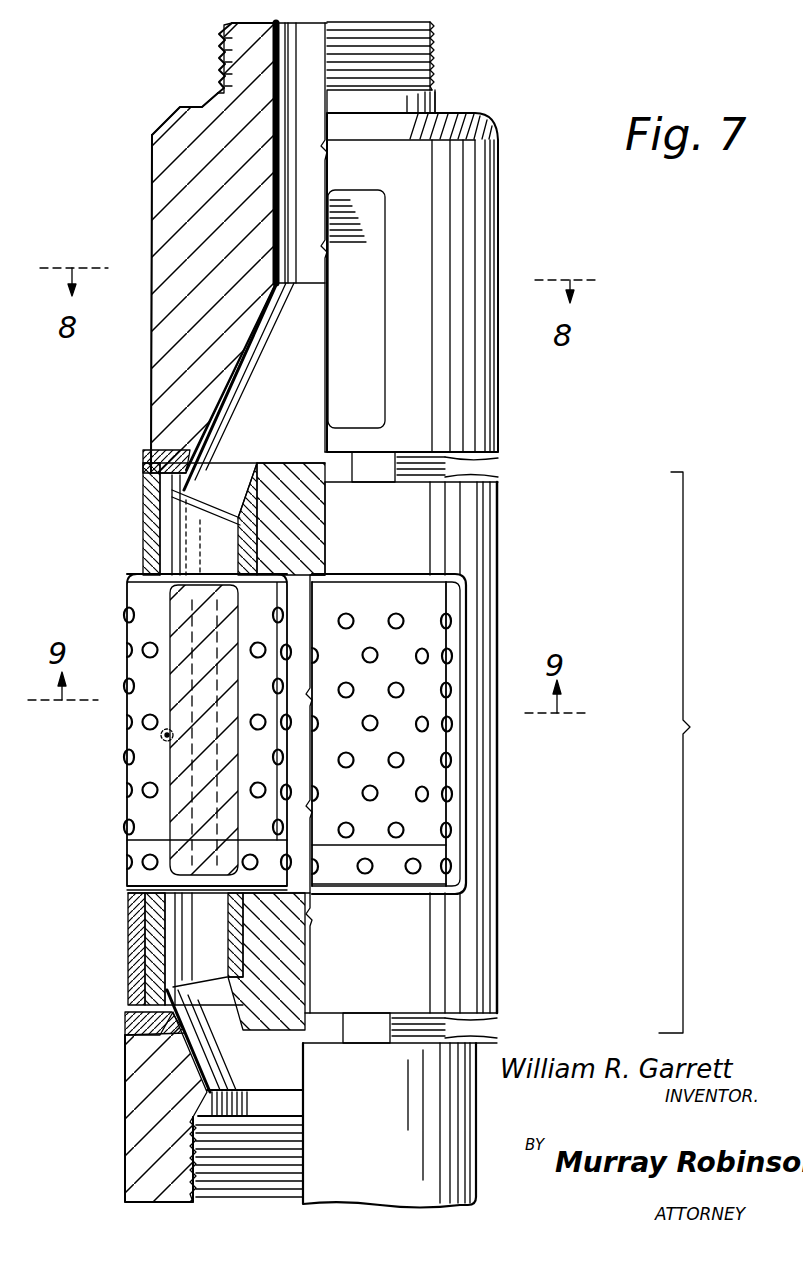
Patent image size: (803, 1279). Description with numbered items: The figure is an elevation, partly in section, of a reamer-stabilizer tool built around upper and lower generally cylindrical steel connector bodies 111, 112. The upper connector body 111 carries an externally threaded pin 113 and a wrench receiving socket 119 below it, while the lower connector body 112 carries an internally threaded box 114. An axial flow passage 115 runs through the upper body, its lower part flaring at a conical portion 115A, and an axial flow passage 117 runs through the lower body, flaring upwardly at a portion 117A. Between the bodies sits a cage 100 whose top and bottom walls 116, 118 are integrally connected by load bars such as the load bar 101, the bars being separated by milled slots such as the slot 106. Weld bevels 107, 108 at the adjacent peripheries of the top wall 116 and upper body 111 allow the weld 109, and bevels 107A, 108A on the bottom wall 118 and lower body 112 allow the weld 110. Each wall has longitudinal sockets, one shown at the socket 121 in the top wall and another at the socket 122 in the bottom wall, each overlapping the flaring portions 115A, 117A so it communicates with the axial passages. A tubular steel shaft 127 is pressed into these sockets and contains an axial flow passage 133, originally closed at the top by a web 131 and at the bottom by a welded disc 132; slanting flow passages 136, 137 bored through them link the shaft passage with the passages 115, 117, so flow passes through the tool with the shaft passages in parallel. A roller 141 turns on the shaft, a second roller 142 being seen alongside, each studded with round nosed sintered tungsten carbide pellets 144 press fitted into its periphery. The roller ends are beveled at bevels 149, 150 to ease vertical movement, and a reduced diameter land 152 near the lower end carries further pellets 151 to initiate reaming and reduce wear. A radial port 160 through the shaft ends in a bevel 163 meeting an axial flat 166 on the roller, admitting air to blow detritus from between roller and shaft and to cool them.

The cage 100 is at (690, 727).
The load bar 101 is at (485, 757).
The slot 106 is at (487, 625).
The weld bevel 107 is at (482, 472).
The weld bevel 107A is at (482, 1036).
The weld bevel 108 is at (485, 468).
The weld bevel 108A is at (482, 1018).
The weld 109 is at (143, 462).
The weld 110 is at (125, 1020).
The upper connector body 111 is at (152, 170).
The lower connector body 112 is at (150, 1165).
The externally threaded pin 113 is at (224, 52).
The internally threaded box 114 is at (150, 1190).
The axial flow passage 115 is at (288, 170).
The flaring portion 115A is at (243, 372).
The top wall 116 is at (298, 518).
The axial flow passage 117 is at (160, 1105).
The flaring portion 117A is at (145, 1070).
The bottom wall 118 is at (285, 940).
The wrench receiving socket 119 is at (380, 325).
The socket 121 is at (160, 508).
The socket 122 is at (150, 938).
The tubular steel shaft 127 is at (155, 917).
The web 131 is at (143, 485).
The disc 132 is at (148, 1005).
The axial flow passage 133 is at (250, 537).
The slanting flow passage 136 is at (257, 472).
The slanting flow passage 137 is at (310, 1000).
The roller 141 is at (135, 808).
The roller 142 is at (368, 600).
The sintered tungsten carbide pellet 144 is at (402, 762).
The bevel 149 is at (135, 576).
The bevel 150 is at (127, 891).
The pellets 151 is at (460, 868).
The reduced diameter land 152 is at (125, 875).
The port 160 is at (160, 740).
The bevel 163 is at (162, 735).
The axial flat 166 is at (178, 596).